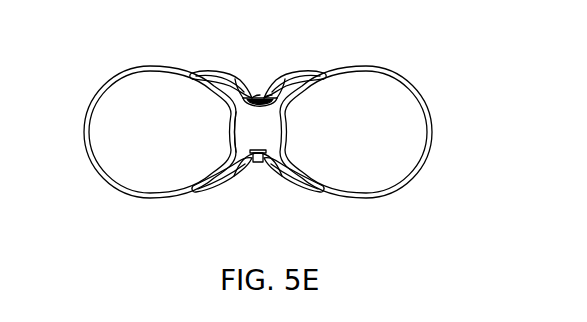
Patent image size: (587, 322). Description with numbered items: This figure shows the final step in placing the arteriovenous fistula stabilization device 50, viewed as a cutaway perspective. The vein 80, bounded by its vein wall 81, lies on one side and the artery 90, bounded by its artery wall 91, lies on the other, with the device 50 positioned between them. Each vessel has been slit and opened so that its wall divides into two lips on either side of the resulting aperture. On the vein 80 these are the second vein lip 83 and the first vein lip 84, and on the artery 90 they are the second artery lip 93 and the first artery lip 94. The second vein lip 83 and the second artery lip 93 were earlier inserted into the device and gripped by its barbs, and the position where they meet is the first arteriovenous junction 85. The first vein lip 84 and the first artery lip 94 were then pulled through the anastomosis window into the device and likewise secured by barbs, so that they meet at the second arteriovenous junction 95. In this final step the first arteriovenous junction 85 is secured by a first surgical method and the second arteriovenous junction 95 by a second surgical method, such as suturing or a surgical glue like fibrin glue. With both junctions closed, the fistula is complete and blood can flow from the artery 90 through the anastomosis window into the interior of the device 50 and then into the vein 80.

The device 50 is at (234, 128).
The vein 80 is at (131, 66).
The vein wall 81 is at (171, 67).
The second vein lip 83 is at (246, 170).
The first vein lip 84 is at (255, 97).
The first arteriovenous junction 85 is at (258, 163).
The artery 90 is at (405, 65).
The artery wall 91 is at (341, 68).
The second artery lip 93 is at (272, 168).
The first artery lip 94 is at (275, 95).
The second arteriovenous junction 95 is at (266, 95).